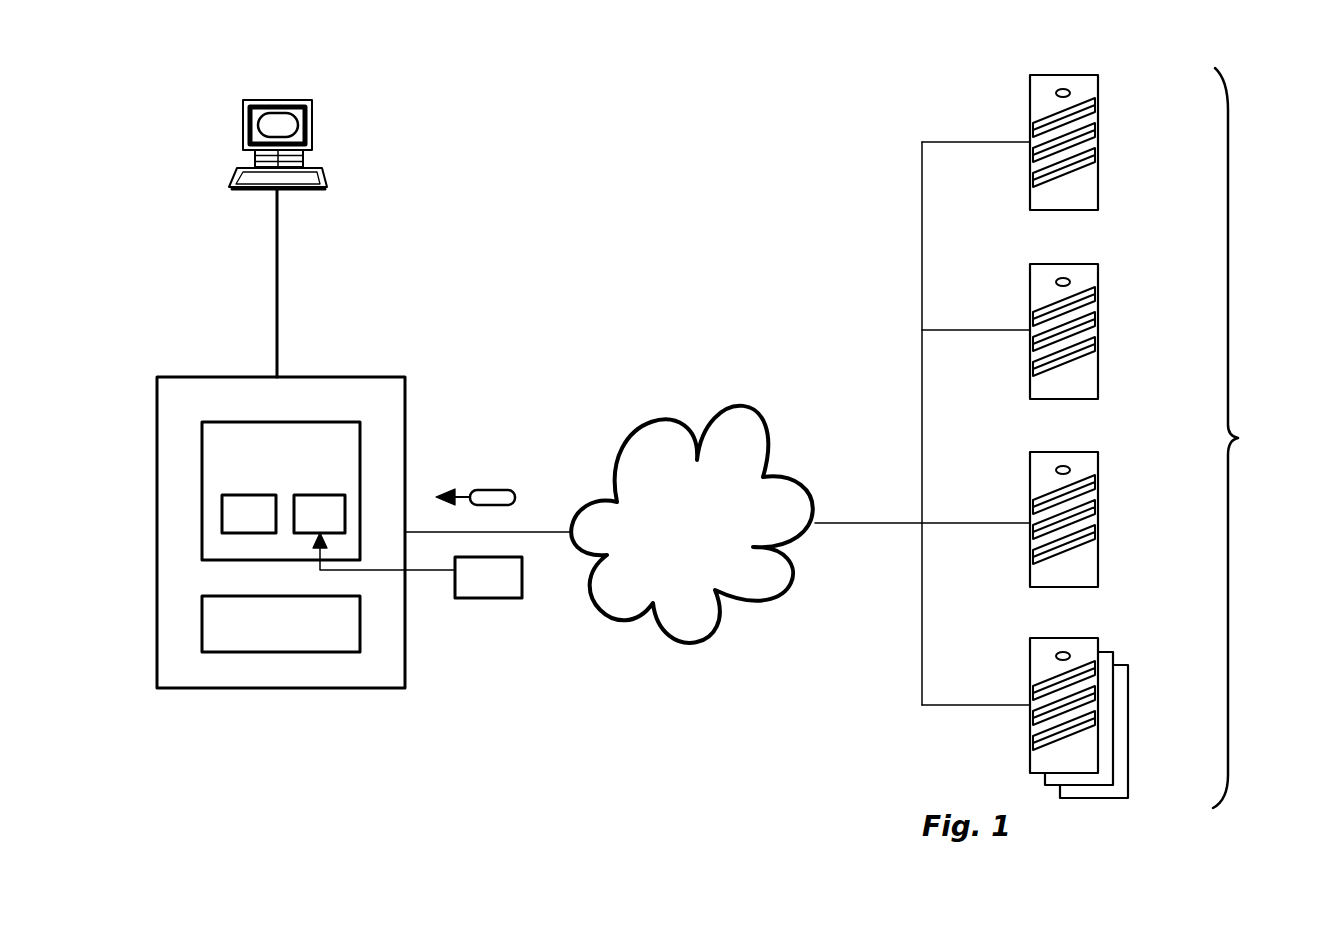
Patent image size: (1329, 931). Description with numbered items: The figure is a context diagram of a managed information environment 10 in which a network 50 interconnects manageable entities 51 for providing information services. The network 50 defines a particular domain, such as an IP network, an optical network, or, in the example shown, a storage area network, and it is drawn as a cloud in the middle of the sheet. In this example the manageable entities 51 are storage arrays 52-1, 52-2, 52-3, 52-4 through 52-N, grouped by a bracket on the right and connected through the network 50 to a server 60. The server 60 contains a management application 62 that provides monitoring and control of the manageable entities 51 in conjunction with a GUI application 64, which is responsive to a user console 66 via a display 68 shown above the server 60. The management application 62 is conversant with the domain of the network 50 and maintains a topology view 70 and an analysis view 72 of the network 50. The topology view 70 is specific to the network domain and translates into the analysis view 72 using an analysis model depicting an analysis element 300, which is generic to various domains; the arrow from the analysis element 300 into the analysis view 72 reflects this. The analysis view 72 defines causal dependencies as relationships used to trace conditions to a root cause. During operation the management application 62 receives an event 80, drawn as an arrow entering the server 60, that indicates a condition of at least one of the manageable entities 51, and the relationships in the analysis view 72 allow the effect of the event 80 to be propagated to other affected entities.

The managed information environment 10 is at (425, 767).
The network 50 is at (694, 458).
The manageable entities 51 is at (1238, 438).
The storage array 52-1 is at (1098, 108).
The storage array 52-2 is at (1098, 293).
The storage array 52-3 is at (1098, 482).
The storage array 52-4 is at (1097, 637).
The storage array 52-N is at (1128, 762).
The server 60 is at (342, 377).
The management application 62 is at (358, 425).
The GUI application 64 is at (362, 622).
The user console 66 is at (323, 185).
The display 68 is at (313, 125).
The topology view 70 is at (249, 514).
The analysis view 72 is at (319, 514).
The event 80 is at (490, 490).
The analysis element 300 is at (417, 565).